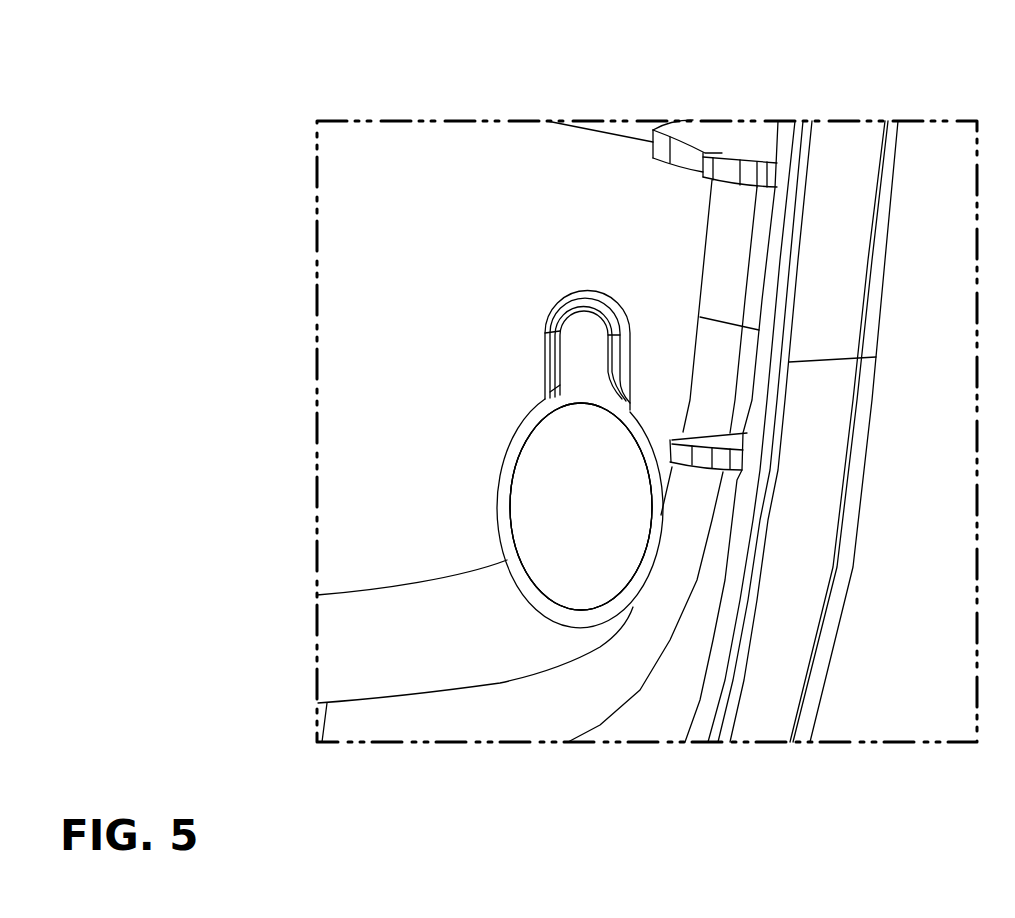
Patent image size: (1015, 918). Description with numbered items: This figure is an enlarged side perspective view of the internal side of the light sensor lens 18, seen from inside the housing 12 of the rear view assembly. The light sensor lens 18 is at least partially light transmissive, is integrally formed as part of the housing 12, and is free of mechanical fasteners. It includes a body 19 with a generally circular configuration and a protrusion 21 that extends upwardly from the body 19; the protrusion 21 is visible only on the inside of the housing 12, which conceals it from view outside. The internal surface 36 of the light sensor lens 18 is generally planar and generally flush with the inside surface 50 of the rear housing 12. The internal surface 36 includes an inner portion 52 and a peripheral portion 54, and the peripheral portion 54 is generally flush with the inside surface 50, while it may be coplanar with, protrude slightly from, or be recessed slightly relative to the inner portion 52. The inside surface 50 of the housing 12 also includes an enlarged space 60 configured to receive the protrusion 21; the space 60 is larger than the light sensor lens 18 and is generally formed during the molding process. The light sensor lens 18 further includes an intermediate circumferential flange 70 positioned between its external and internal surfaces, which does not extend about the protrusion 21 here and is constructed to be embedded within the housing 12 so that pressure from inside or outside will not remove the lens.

The housing 12 is at (505, 157).
The inside surface 50 is at (646, 242).
The enlarged space 60 is at (578, 301).
The protrusion 21 is at (585, 348).
The intermediate circumferential flange 70 is at (557, 383).
The peripheral portion 54 is at (523, 433).
The body 19 is at (558, 470).
The internal surface 36 is at (586, 545).
The inner portion 52 is at (543, 532).
The light sensor lens 18 is at (580, 620).